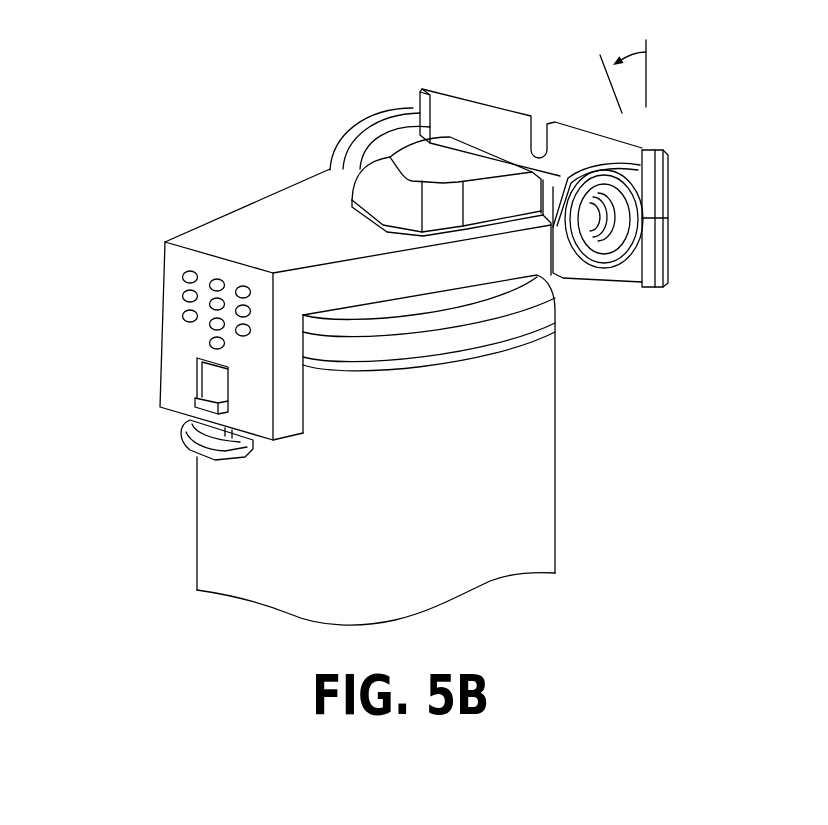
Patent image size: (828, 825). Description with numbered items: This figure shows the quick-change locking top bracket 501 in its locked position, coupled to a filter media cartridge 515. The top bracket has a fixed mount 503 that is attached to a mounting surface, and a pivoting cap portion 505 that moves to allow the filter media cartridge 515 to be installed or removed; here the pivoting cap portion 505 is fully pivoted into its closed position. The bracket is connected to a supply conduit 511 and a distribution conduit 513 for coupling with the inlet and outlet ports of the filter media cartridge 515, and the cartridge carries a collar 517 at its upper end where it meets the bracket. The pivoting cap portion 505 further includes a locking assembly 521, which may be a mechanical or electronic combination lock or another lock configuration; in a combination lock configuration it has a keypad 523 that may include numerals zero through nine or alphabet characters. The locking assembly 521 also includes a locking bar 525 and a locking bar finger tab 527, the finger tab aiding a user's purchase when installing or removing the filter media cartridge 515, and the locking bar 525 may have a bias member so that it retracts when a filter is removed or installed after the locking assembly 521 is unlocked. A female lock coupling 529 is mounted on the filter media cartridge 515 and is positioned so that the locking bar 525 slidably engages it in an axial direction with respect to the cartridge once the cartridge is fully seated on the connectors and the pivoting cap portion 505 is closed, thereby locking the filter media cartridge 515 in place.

The quick-change locking top bracket 501 is at (360, 80).
The fixed mount 503 is at (460, 113).
The pivoting cap portion 505 is at (303, 195).
The supply conduit 511 is at (347, 141).
The distribution conduit 513 is at (602, 237).
The filter media cartridge 515 is at (203, 550).
The collar 517 is at (533, 470).
The locking assembly 521 is at (192, 403).
The keypad 523 is at (170, 293).
The locking bar 525 is at (207, 429).
The locking bar finger tab 527 is at (168, 402).
The female lock coupling 529 is at (186, 447).